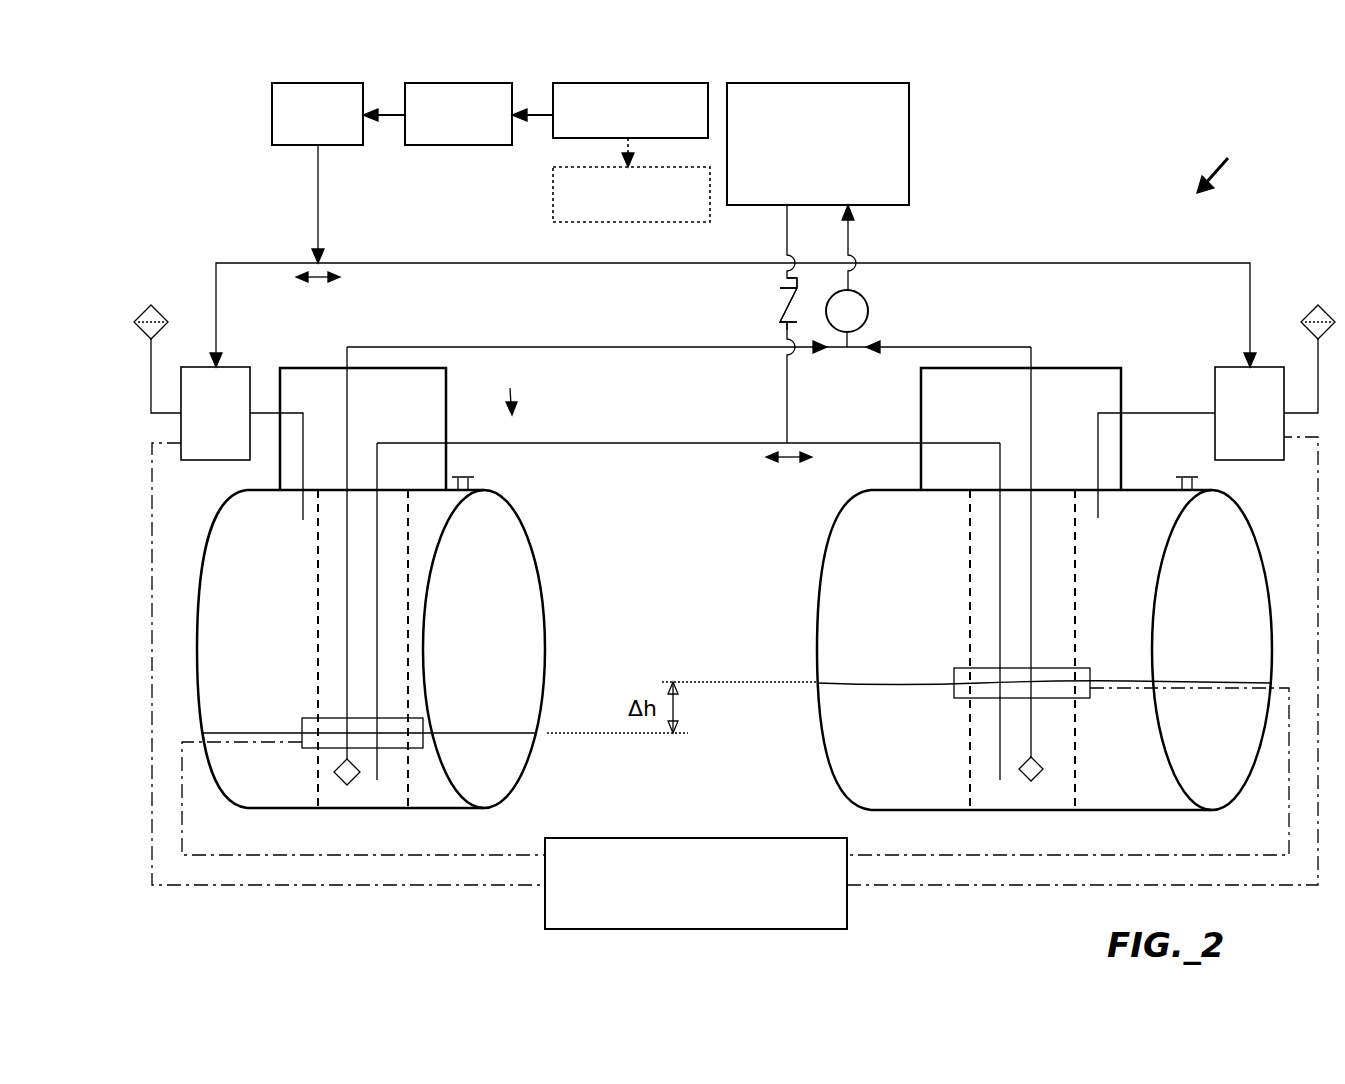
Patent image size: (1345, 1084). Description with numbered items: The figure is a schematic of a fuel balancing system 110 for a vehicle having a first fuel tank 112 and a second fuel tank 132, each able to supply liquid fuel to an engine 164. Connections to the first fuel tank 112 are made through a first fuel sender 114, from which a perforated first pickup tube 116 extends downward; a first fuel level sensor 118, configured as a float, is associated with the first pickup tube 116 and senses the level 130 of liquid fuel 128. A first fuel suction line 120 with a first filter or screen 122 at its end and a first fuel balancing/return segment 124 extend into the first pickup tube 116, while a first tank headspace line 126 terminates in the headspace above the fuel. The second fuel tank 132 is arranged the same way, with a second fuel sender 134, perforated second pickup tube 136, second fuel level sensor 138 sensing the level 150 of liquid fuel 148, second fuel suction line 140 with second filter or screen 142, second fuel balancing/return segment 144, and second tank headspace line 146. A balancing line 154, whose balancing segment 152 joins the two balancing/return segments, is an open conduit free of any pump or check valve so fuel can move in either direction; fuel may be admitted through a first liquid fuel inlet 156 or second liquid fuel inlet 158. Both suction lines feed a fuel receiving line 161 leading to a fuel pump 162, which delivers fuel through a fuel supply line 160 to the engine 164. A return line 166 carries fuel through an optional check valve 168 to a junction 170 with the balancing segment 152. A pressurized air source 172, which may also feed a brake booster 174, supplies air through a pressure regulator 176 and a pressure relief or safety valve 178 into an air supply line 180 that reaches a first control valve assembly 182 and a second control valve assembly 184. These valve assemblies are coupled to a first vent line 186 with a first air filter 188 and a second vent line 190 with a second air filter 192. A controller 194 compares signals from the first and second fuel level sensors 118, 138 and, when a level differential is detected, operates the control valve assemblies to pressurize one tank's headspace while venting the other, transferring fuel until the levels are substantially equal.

The fuel balancing system 110 is at (1235, 161).
The first fuel tank 112 is at (822, 573).
The first fuel sender 114 is at (1050, 368).
The first pickup tube 116 is at (1076, 613).
The first fuel level sensor 118 is at (954, 668).
The first fuel suction line 120 is at (1031, 522).
The first filter or screen 122 is at (1038, 776).
The first fuel balancing/return segment 124 is at (1000, 579).
The first tank headspace line 126 is at (1098, 503).
The liquid fuel 128 is at (1128, 768).
The level of liquid fuel 130 is at (875, 680).
The second fuel tank 132 is at (541, 588).
The second fuel sender 134 is at (370, 368).
The second pickup tube 136 is at (409, 685).
The second fuel level sensor 138 is at (302, 718).
The second fuel suction line 140 is at (347, 580).
The second filter or screen 142 is at (344, 787).
The second fuel balancing/return segment 144 is at (377, 642).
The second tank headspace line 146 is at (303, 503).
The liquid fuel 148 is at (268, 790).
The level of liquid fuel 150 is at (494, 730).
The balancing segment 152 is at (588, 442).
The balancing line 154 is at (511, 387).
The first liquid fuel inlet 156 is at (1186, 476).
The second liquid fuel inlet 158 is at (478, 478).
The fuel supply line 160 is at (854, 234).
The fuel receiving line 161 is at (630, 345).
The fuel pump 162 is at (869, 307).
The engine 164 is at (818, 82).
The return line 166 is at (778, 231).
The check valve 168 is at (782, 306).
The junction 170 is at (788, 442).
The pressurized air source 172 is at (632, 82).
The brake booster 174 is at (551, 193).
The pressure regulator 176 is at (466, 82).
The pressure relief or safety valve 178 is at (319, 82).
The air supply line 180 is at (463, 264).
The first control valve assembly 182 is at (1214, 366).
The second control valve assembly 184 is at (249, 366).
The first vent line 186 is at (1316, 373).
The first air filter 188 is at (1310, 308).
The second vent line 190 is at (152, 362).
The second air filter 192 is at (158, 305).
The controller 194 is at (758, 837).